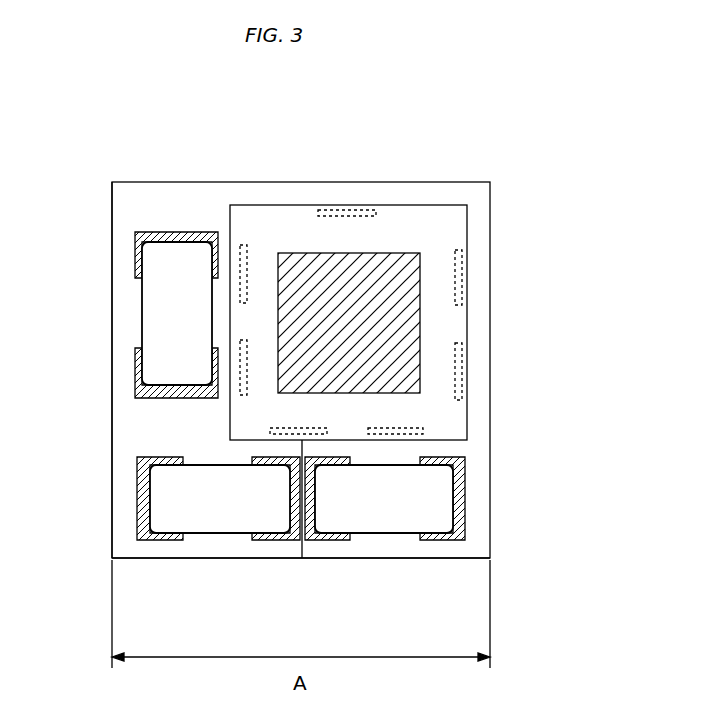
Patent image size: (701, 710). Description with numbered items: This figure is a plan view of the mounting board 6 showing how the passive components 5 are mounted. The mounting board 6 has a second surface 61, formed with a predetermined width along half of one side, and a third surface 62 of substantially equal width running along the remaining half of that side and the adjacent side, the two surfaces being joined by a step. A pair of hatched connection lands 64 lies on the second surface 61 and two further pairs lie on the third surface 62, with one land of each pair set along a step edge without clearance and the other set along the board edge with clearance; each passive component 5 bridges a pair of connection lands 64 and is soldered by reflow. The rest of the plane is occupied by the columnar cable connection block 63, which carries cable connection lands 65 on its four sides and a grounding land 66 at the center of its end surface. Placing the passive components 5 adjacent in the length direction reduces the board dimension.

The passive component 5 is at (160, 310).
The mounting board 6 is at (508, 362).
The second surface 61 is at (392, 547).
The third surface 62 is at (132, 423).
The cable connection block 63 is at (452, 206).
The connection land 64 is at (140, 252).
The cable connection land 65 is at (262, 350).
The grounding land 66 is at (388, 253).